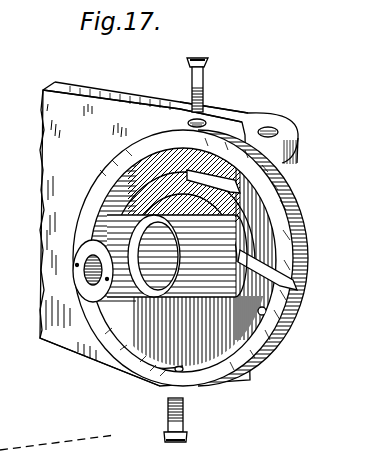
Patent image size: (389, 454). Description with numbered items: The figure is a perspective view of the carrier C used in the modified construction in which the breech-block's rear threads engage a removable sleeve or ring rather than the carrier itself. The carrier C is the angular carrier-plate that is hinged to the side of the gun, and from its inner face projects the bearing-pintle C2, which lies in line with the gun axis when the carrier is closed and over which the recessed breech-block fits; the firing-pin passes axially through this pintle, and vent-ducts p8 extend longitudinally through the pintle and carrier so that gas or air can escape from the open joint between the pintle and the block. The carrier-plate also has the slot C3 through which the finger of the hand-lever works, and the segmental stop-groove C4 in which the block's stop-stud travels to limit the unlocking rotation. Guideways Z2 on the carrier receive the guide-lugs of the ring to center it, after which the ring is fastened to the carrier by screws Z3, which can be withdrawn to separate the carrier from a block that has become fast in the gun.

The carrier C is at (115, 102).
The bearing-pintle C2 is at (177, 256).
The slot C3 is at (214, 183).
The segmental stop-groove C4 is at (268, 215).
The guideways Z2 is at (292, 358).
The screws Z3 is at (203, 425).
The vent-ducts p8 is at (105, 279).